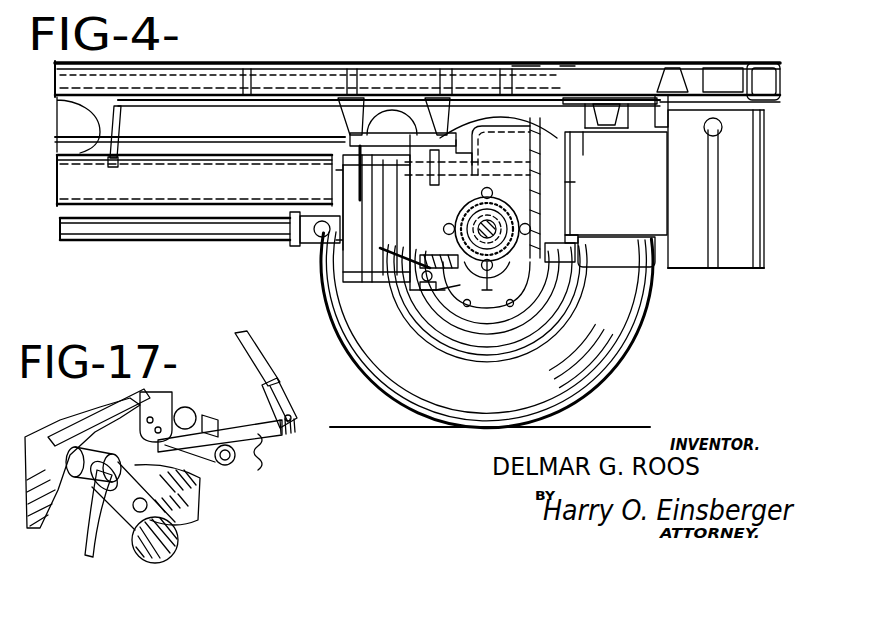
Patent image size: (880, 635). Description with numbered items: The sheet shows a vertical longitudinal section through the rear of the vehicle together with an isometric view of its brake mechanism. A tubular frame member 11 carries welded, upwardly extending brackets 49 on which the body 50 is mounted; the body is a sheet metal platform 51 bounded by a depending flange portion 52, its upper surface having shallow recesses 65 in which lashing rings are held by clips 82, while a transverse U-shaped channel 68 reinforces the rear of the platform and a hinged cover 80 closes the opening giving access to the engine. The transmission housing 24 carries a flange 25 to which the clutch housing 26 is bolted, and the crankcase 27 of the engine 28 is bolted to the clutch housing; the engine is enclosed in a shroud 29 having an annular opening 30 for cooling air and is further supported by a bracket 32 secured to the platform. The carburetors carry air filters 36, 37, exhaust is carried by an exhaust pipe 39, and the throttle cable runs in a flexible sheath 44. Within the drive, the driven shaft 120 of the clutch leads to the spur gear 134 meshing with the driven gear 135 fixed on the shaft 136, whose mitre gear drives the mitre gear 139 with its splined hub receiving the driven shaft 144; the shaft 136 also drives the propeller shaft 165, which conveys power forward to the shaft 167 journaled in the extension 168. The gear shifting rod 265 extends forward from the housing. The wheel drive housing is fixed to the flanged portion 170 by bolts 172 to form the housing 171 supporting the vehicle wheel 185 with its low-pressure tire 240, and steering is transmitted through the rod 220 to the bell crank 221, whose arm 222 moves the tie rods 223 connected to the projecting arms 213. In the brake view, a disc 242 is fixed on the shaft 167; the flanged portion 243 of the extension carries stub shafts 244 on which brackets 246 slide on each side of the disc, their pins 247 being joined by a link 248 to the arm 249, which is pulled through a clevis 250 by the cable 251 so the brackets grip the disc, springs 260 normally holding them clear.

In FIG. 4, the tubular frame member 11 is at (106, 199).
In FIG. 4, the transmission housing 24 is at (560, 268).
In FIG. 4, the flange 25 is at (560, 200).
In FIG. 4, the clutch housing 26 is at (560, 182).
In FIG. 4, the crankcase 27 is at (616, 183).
In FIG. 4, the engine 28 is at (714, 189).
In FIG. 4, the shroud 29 is at (690, 270).
In FIG. 4, the annular opening 30 is at (766, 255).
In FIG. 4, the bracket 32 is at (723, 81).
In FIG. 4, the air filter 36 is at (643, 70).
In FIG. 4, the air filter 37 is at (558, 65).
In FIG. 4, the exhaust pipe 39 is at (725, 138).
In FIG. 4, the flexible sheath 44 is at (186, 106).
In FIG. 4, the bracket 49 is at (118, 118).
In FIG. 4, the body 50 is at (474, 56).
In FIG. 4, the platform 51 is at (244, 95).
In FIG. 4, the flange portion 52 is at (286, 90).
In FIG. 4, the recess 65 is at (165, 64).
In FIG. 4, the U-shaped channel 68 is at (700, 88).
In FIG. 4, the hinged cover 80 is at (606, 66).
In FIG. 4, the clip 82 is at (505, 65).
In FIG. 4, the driven shaft 120 is at (447, 194).
In FIG. 4, the spur gear 134 is at (356, 188).
In FIG. 4, the driven gear 135 is at (345, 270).
In FIG. 4, the shaft 136 is at (466, 220).
In FIG. 4, the mitre gear 139 is at (466, 217).
In FIG. 4, the driven shaft 144 is at (493, 222).
In FIG. 4, the propeller shaft 165 is at (163, 236).
In FIG. 4, the flanged portion 170 is at (540, 296).
In FIG. 4, the housing 171 is at (548, 282).
In FIG. 4, the bolt 172 is at (543, 326).
In FIG. 4, the vehicle wheel 185 is at (462, 356).
In FIG. 4, the projecting arm 213 is at (440, 296).
In FIG. 4, the rod 220 is at (300, 150).
In FIG. 4, the bell crank 221 is at (356, 171).
In FIG. 4, the arm 222 is at (466, 262).
In FIG. 4, the tie rod 223 is at (422, 281).
In FIG. 4, the tire 240 is at (622, 373).
In FIG. 4, the rod 265 is at (290, 142).
In FIG. 17, the shaft 167 is at (172, 548).
In FIG. 17, the extension 168 is at (36, 447).
In FIG. 17, the disc 242 is at (203, 512).
In FIG. 17, the flanged portion 243 is at (130, 403).
In FIG. 17, the stub shaft 244 is at (192, 472).
In FIG. 17, the bracket 246 is at (195, 473).
In FIG. 17, the pin 247 is at (158, 390).
In FIG. 17, the link 248 is at (100, 456).
In FIG. 17, the arm 249 is at (278, 437).
In FIG. 17, the clevis 250 is at (282, 390).
In FIG. 17, the cable 251 is at (255, 352).
In FIG. 17, the spring 260 is at (197, 413).